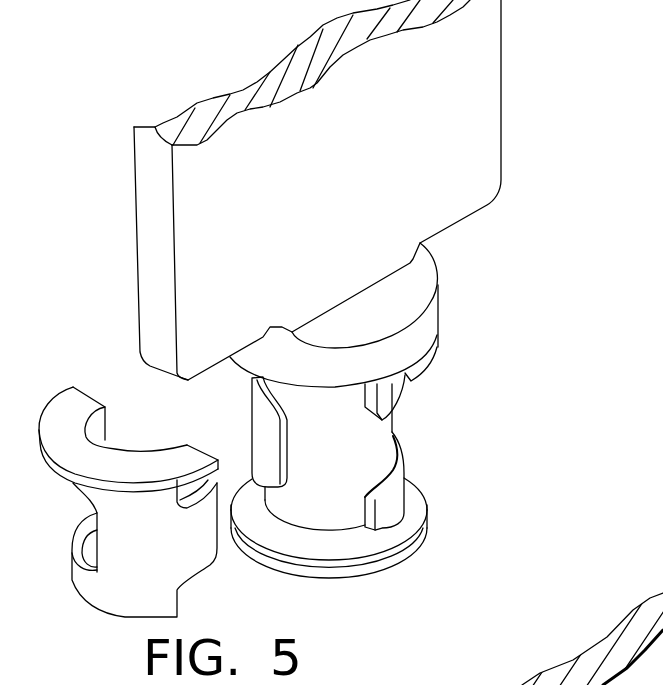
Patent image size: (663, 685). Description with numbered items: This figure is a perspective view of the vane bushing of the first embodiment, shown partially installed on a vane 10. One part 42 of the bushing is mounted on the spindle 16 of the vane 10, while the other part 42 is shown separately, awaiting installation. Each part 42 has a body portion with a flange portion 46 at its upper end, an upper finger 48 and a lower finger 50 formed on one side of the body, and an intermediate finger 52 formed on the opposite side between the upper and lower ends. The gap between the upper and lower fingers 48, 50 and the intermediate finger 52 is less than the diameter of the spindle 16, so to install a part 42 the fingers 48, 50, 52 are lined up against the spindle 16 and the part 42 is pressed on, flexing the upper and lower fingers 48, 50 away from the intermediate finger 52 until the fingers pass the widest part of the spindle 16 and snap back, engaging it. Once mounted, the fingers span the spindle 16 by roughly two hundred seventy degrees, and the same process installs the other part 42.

The vane 10 is at (540, 84).
The spindle 16 is at (354, 437).
The part 42 is at (400, 455).
The flange portion 46 is at (434, 367).
The upper finger 48 is at (390, 393).
The lower finger 50 is at (400, 490).
The intermediate finger 52 is at (262, 435).